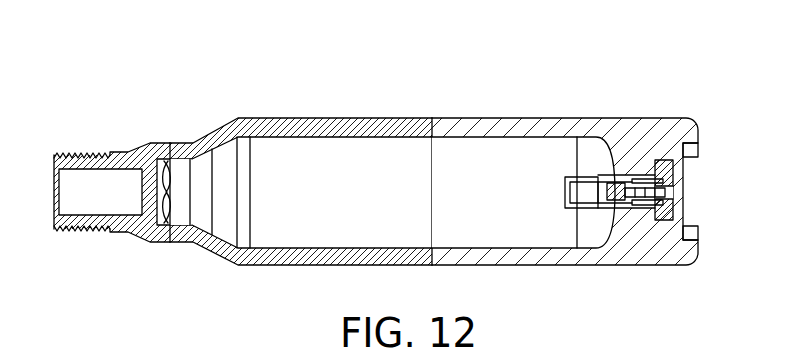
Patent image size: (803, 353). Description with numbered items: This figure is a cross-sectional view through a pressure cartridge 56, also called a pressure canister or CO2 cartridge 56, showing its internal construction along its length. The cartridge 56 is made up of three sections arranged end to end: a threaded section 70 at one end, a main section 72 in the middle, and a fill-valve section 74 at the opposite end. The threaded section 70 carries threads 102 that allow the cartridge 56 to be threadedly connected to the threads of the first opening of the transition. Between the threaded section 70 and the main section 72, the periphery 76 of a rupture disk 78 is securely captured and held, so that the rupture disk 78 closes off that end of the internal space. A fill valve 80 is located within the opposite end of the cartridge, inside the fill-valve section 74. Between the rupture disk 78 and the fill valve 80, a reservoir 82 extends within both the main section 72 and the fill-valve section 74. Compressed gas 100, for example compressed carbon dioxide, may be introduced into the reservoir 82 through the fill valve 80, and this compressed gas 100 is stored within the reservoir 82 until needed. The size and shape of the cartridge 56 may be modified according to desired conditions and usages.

The pressure cartridge 56 is at (597, 86).
The threaded section 70 is at (121, 231).
The main section 72 is at (308, 259).
The fill-valve section 74 is at (640, 255).
The periphery 76 is at (171, 233).
The rupture disk 78 is at (169, 190).
The fill valve 80 is at (663, 181).
The reservoir 82 is at (401, 199).
The compressed gas 100 is at (514, 187).
The threads 102 is at (73, 231).